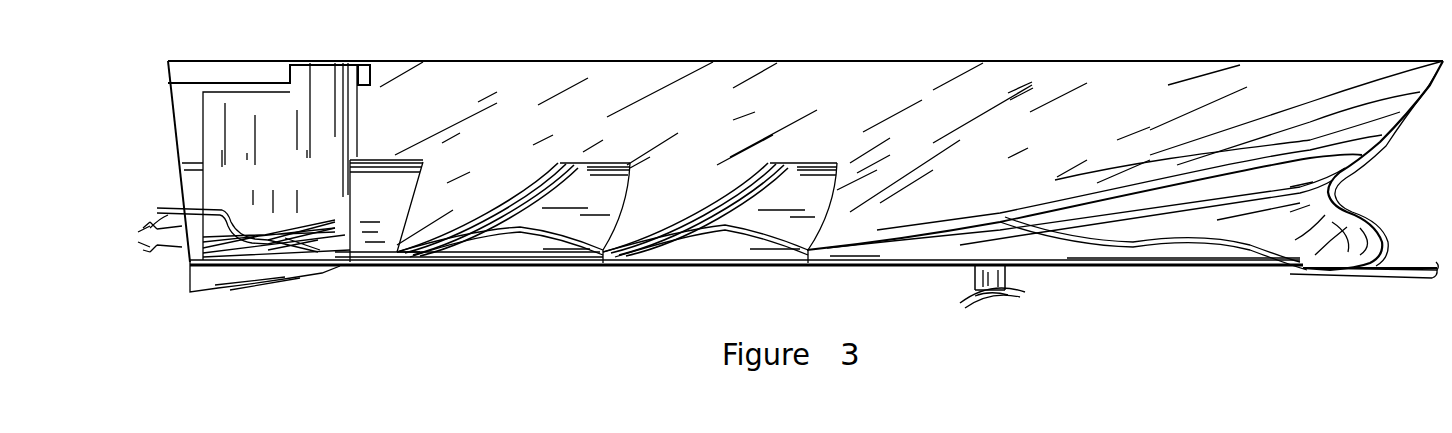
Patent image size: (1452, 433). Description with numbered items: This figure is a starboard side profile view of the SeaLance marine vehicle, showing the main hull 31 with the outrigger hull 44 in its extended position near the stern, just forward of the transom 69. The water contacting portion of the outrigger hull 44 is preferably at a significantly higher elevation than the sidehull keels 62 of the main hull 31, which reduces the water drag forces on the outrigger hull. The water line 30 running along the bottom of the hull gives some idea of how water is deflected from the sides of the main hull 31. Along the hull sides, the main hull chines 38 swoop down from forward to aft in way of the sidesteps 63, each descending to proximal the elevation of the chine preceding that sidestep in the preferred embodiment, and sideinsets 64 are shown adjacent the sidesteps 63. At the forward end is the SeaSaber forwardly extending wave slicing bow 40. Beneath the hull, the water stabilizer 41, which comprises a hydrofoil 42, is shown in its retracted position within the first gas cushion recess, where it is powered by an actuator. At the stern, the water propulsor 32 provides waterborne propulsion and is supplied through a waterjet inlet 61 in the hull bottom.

The water line 30 is at (1375, 280).
The main hull 31 is at (1142, 118).
The water propulsor 32 is at (177, 240).
The main hull chines 38 is at (545, 190).
The wave slicing bow 40 is at (1380, 222).
The water stabilizer 41 is at (975, 287).
The hydrofoil 42 is at (1023, 295).
The outrigger hull 44 is at (300, 182).
The waterjet inlet 61 is at (282, 282).
The sidehull keels 62 is at (412, 267).
The sidesteps 63 is at (582, 195).
The sideinsets 64 is at (392, 215).
The transom 69 is at (168, 85).